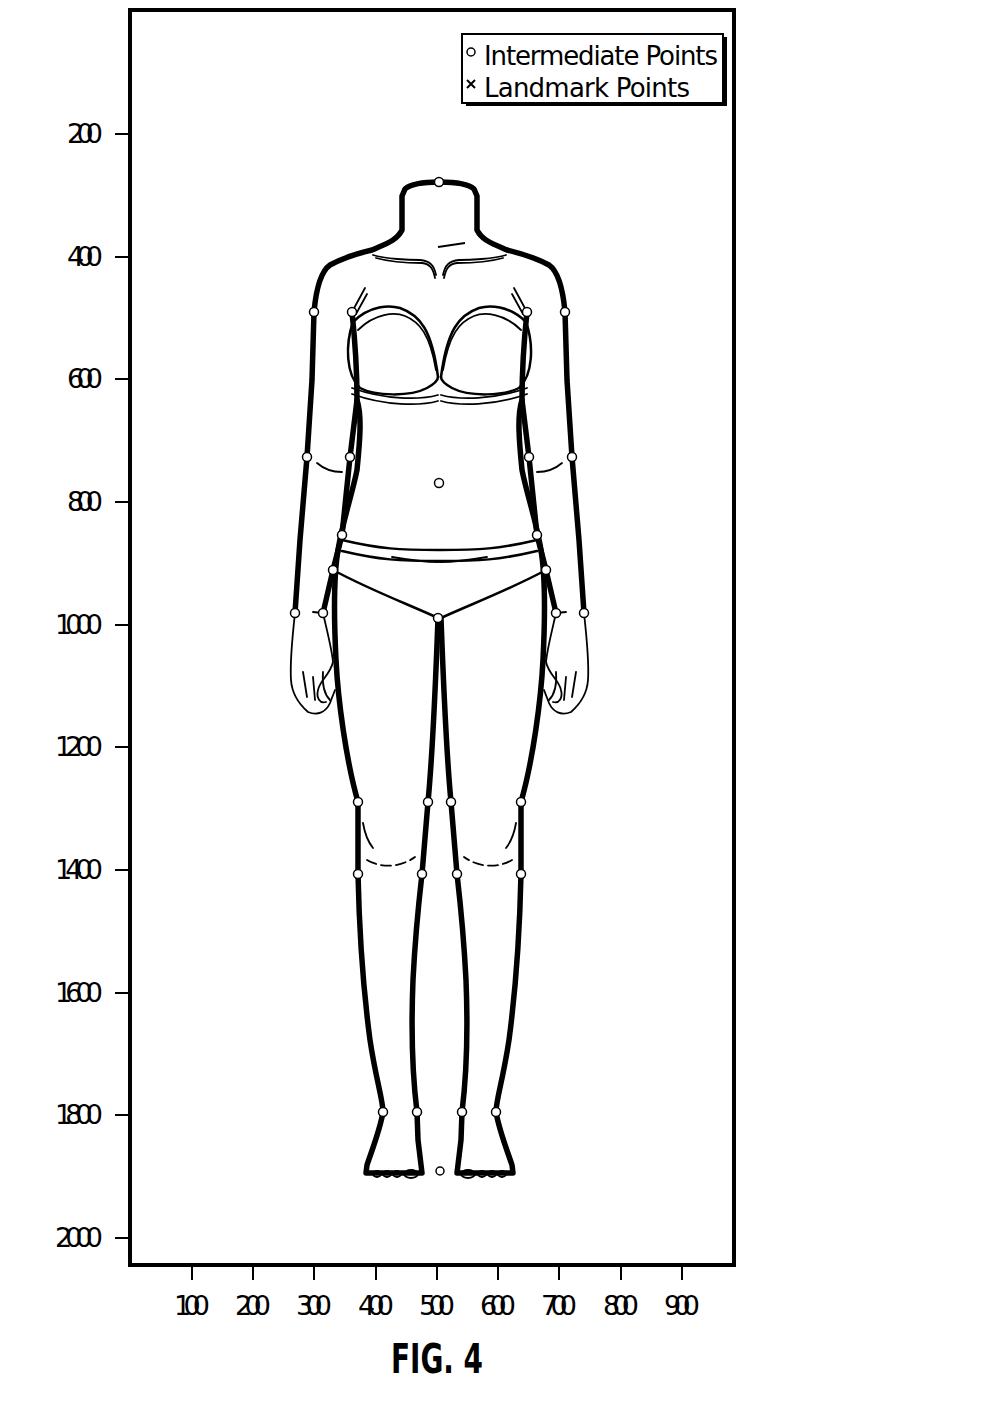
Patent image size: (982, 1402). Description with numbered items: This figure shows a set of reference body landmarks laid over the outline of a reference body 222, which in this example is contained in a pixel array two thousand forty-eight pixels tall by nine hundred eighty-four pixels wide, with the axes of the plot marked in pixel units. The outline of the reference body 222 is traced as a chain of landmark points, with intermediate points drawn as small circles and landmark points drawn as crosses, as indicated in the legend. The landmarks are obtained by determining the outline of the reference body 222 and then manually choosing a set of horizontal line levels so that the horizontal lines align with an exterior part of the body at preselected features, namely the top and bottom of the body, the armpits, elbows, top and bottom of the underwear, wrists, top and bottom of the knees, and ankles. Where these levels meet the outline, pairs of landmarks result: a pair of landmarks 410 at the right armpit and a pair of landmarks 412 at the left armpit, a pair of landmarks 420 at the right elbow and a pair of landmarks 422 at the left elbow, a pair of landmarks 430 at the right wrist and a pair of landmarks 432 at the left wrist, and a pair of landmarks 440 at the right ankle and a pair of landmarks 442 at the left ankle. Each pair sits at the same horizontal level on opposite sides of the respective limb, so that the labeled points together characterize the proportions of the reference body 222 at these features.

The reference body 222 is at (742, 574).
The pair of landmarks at the right armpit 410 is at (311, 311).
The pair of landmarks at the left armpit 412 is at (568, 311).
The pair of landmarks at the right elbow 420 is at (304, 456).
The pair of landmarks at the left elbow 422 is at (575, 456).
The pair of landmarks at the right wrist 430 is at (292, 612).
The pair of landmarks at the left wrist 432 is at (587, 612).
The pair of landmarks at the right ankle 440 is at (380, 1111).
The pair of landmarks at the left ankle 442 is at (499, 1111).